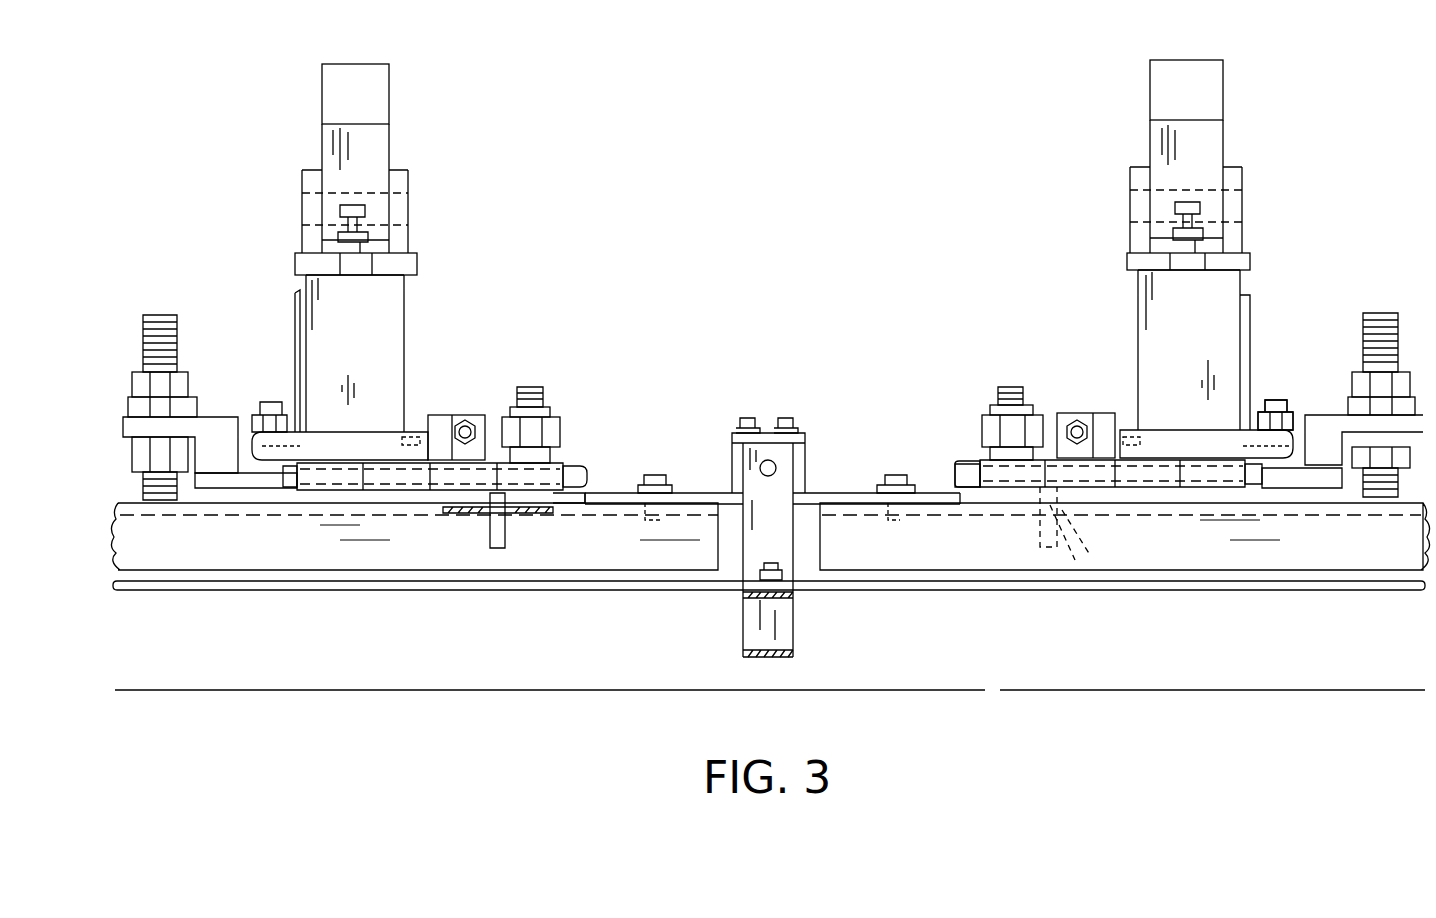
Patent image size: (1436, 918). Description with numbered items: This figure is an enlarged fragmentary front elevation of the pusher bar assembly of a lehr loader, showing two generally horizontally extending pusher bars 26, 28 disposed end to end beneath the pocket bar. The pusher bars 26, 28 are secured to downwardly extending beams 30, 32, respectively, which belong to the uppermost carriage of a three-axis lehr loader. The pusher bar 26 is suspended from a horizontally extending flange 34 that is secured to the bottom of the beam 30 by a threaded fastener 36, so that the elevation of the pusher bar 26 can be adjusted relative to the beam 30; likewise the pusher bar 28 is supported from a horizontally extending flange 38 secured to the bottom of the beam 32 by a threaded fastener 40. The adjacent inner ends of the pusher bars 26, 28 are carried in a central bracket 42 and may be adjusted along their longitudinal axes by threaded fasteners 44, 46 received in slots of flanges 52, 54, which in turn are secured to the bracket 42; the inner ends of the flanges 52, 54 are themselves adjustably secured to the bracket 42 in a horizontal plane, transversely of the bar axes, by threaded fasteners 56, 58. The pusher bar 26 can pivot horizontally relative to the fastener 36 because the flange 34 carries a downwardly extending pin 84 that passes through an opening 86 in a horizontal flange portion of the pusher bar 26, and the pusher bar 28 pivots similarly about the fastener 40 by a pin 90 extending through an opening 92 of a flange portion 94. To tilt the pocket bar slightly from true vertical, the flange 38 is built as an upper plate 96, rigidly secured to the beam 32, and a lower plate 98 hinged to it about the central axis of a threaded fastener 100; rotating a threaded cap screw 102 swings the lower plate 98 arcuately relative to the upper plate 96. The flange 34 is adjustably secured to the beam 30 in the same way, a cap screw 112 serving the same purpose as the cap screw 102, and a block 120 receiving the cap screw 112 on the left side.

The pusher bar 26 is at (246, 553).
The pusher bar 28 is at (874, 558).
The beam 30 is at (363, 330).
The beam 32 is at (1201, 318).
The flange 34 is at (330, 432).
The threaded fastener 36 is at (160, 313).
The flange 38 is at (1190, 460).
The threaded fastener 40 is at (1370, 313).
The bracket 42 is at (768, 433).
The threaded fastener 44 is at (650, 475).
The threaded fastener 46 is at (895, 475).
The flange 52 is at (703, 493).
The flange 54 is at (840, 493).
The threaded fastener 56 is at (745, 418).
The threaded fastener 58 is at (785, 418).
The pin 84 is at (445, 513).
The opening 86 is at (517, 513).
The pin 90 is at (1053, 510).
The opening 92 is at (1057, 513).
The flange portion 94 is at (1017, 487).
The upper plate 96 is at (1235, 460).
The lower plate 98 is at (325, 490).
The threaded fastener 100 is at (967, 487).
The threaded cap screw 102 is at (1000, 387).
The cap screw 112 is at (535, 387).
The clamp block 120 is at (465, 415).